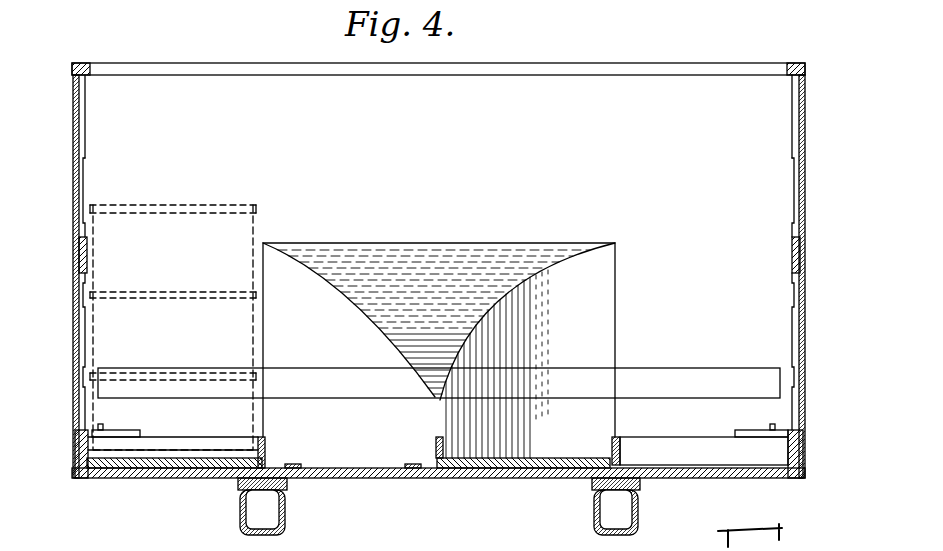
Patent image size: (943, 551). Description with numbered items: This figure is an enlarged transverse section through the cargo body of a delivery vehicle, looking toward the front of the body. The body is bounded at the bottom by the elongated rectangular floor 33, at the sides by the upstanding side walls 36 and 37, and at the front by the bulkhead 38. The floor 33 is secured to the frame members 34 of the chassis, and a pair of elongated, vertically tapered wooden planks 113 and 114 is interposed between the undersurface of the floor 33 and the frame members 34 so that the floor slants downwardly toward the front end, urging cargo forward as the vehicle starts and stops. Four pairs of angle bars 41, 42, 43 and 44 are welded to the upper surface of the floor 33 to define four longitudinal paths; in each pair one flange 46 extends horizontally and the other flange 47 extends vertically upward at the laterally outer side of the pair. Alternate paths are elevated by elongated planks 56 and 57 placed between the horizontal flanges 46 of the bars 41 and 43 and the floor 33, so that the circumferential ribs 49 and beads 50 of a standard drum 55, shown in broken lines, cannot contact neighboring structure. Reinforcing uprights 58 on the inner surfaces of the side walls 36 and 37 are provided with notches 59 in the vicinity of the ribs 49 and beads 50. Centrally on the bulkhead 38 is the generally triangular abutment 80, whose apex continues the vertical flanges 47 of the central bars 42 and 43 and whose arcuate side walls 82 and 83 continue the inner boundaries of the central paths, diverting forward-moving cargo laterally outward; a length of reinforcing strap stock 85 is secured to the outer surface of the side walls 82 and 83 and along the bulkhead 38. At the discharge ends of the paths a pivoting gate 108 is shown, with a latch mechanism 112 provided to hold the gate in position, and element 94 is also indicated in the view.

The floor 33 is at (364, 478).
The frame members 34 is at (240, 514).
The side wall 36 is at (73, 212).
The side wall 37 is at (806, 192).
The front wall or bulk head 38 is at (438, 99).
The angle bars 41 is at (240, 448).
The angle bars 42 is at (288, 464).
The angle bars 43 is at (458, 456).
The angle bars 44 is at (630, 464).
The horizontal flanges 46 is at (90, 478).
The vertical flanges 47 is at (74, 448).
The circumferential ribs 49 is at (185, 292).
The beads 50 is at (150, 212).
The drum 55 is at (218, 206).
The plank 56 is at (158, 468).
The plank 57 is at (534, 478).
The reinforcing uprights 58 is at (86, 114).
The notches 59 is at (84, 184).
The abutment 80 is at (522, 244).
The side wall 82 is at (354, 422).
The side wall 83 is at (497, 364).
The reinforcing strap stock 85 is at (318, 370).
The tray element 94 is at (776, 463).
The gate 108 is at (702, 451).
The latch mechanism 112 is at (112, 432).
The plank 113 is at (288, 488).
The plank 114 is at (592, 490).